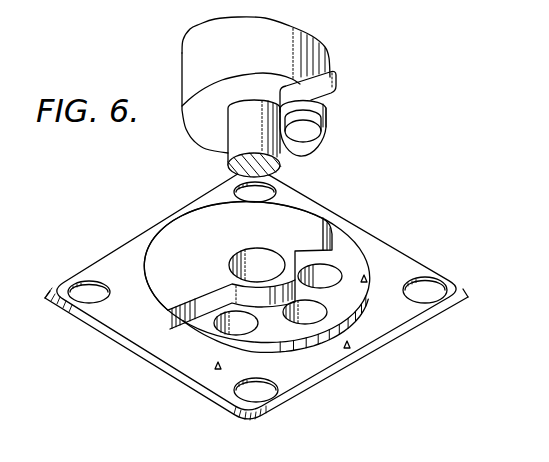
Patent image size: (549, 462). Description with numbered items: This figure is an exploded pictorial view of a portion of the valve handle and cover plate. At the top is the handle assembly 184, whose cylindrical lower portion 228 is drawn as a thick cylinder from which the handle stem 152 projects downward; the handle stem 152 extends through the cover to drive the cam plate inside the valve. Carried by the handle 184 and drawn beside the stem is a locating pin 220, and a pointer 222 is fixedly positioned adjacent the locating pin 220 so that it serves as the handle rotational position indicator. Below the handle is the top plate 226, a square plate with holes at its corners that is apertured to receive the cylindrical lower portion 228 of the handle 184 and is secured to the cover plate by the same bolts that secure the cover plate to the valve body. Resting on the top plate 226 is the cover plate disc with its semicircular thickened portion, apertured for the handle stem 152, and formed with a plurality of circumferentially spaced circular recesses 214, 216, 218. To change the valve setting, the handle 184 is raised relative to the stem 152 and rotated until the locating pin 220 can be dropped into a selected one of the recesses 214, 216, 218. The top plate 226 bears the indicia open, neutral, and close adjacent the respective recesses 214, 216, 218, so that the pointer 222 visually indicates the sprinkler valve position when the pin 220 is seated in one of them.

The handle assembly 184 is at (283, 84).
The cylindrical lower portion 228 is at (330, 52).
The pointer 222 is at (342, 80).
The locating pin 220 is at (328, 118).
The handle stem 152 is at (233, 142).
The top plate 226 is at (419, 262).
The circular recess 218 is at (313, 258).
The circular recess 214 is at (228, 316).
The circular recess 216 is at (312, 310).